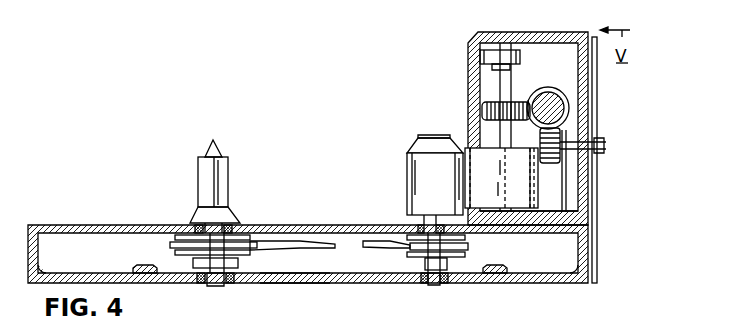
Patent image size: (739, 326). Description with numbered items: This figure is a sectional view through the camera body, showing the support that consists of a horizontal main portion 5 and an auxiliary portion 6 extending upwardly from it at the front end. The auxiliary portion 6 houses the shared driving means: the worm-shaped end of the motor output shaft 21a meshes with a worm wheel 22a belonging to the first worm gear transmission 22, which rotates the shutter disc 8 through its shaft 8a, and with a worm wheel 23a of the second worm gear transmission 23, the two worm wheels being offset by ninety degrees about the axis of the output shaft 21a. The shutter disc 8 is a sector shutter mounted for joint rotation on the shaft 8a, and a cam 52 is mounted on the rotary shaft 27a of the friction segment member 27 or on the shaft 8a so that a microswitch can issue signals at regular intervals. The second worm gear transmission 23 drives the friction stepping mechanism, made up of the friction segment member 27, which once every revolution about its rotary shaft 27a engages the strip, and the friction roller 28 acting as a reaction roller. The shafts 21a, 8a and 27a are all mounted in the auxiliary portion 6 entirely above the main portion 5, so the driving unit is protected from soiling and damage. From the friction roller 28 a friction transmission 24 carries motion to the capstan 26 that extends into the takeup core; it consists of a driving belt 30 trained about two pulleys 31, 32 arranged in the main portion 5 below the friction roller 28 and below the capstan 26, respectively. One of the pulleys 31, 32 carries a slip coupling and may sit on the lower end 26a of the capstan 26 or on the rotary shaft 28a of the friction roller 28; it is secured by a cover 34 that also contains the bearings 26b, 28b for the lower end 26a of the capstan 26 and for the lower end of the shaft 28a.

The main portion 5 is at (71, 225).
The auxiliary portion 6 is at (550, 31).
The shutter disc 8 is at (597, 82).
The shaft 8a is at (606, 146).
The output shaft 21a is at (550, 92).
The first worm gear transmission 22 is at (565, 158).
The worm wheel 22a is at (550, 163).
The second worm gear transmission 23 is at (522, 101).
The worm wheel 23a is at (498, 110).
The friction transmission 24 is at (383, 249).
The capstan 26 is at (205, 165).
The lower end of the capstan 26a is at (215, 286).
The bearing 26b is at (197, 280).
The friction segment member 27 is at (480, 147).
The rotary shaft 27a is at (507, 128).
The friction roller 28 is at (413, 161).
The rotary shaft 28a is at (427, 283).
The bearing 28b is at (445, 284).
The driving belt 30 is at (318, 243).
The pulley 31 is at (468, 249).
The pulley 32 is at (187, 238).
The cover 34 is at (295, 283).
The cam 52 is at (492, 56).